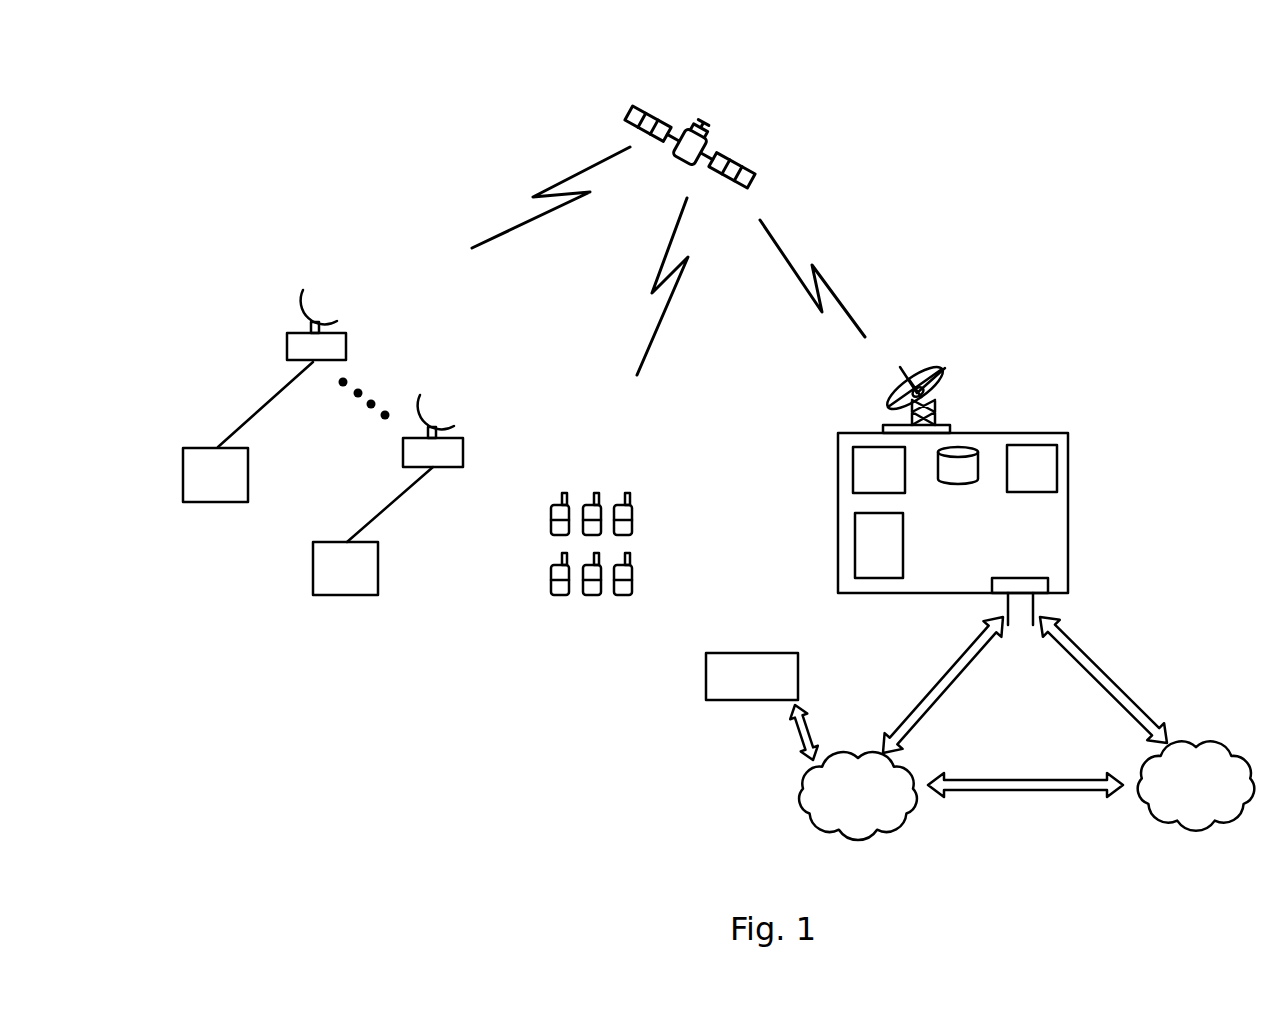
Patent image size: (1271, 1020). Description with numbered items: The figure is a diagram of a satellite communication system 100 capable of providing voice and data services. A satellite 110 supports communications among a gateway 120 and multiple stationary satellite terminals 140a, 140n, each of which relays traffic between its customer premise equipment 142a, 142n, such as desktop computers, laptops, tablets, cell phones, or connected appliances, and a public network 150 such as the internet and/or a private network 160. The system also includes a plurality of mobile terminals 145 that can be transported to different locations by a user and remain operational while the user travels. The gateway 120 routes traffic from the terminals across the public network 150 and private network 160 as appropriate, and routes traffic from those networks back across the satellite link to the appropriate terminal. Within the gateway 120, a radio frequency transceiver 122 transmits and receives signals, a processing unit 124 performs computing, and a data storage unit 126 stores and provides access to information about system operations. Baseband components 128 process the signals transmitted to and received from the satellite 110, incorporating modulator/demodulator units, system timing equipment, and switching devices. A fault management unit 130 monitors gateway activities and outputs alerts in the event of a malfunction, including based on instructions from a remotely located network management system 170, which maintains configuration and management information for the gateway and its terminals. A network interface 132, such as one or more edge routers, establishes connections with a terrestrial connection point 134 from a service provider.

The satellite communication system 100 is at (1090, 83).
The satellite 110 is at (733, 157).
The gateway 120 is at (1135, 335).
The radio frequency transceiver 122 is at (947, 373).
The processing unit 124 is at (853, 470).
The data storage unit 126 is at (960, 488).
The baseband components 128 is at (855, 545).
The fault management unit 130 is at (1057, 462).
The network interface 132 is at (1018, 578).
The terrestrial connection point 134 is at (1020, 633).
The stationary satellite terminal 140a is at (285, 345).
The stationary satellite terminal 140n is at (402, 452).
The customer premise equipment 142a is at (217, 502).
The customer premise equipment 142n is at (345, 595).
The mobile terminals 145 is at (532, 605).
The public network 150 is at (1196, 796).
The private network 160 is at (858, 807).
The network management system 170 is at (706, 682).